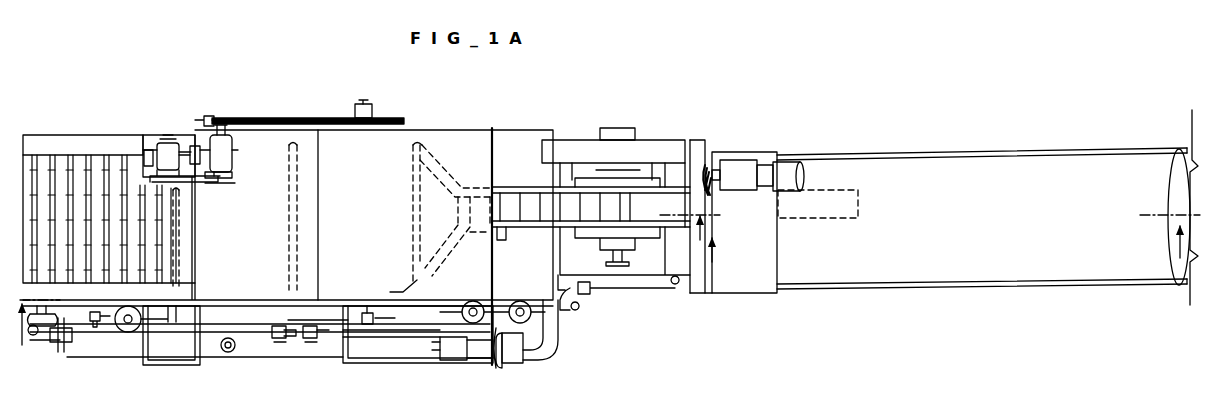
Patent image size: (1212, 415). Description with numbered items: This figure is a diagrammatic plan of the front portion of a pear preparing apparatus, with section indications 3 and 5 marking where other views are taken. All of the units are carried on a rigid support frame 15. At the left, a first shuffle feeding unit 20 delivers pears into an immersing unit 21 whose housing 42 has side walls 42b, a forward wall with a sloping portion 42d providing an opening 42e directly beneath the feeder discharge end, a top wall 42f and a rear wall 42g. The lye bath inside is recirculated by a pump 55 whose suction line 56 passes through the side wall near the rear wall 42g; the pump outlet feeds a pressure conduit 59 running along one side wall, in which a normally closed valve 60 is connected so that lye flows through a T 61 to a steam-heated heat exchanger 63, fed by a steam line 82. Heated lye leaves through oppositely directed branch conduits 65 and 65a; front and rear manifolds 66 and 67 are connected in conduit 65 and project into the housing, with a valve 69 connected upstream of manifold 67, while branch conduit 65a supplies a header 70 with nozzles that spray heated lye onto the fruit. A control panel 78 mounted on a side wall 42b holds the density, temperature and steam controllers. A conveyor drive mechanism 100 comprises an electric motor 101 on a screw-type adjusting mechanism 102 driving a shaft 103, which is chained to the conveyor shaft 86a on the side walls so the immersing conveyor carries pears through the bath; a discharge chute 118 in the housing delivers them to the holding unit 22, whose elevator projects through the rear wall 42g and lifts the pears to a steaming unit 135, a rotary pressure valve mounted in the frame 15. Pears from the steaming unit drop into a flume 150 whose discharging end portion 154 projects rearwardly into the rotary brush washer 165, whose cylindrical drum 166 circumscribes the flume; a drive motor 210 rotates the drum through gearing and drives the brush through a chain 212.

The support frame 15 is at (46, 135).
The first shuffle feeding unit 20 is at (145, 220).
The immersing unit 21 is at (360, 217).
The holding unit 22 is at (530, 228).
The housing 42 is at (427, 130).
The side walls 42b is at (310, 118).
The sloping portion 42d is at (255, 236).
The opening 42e is at (193, 243).
The top wall 42f is at (366, 183).
The rear wall 42g is at (486, 151).
The pump 55 is at (528, 365).
The line 56 is at (552, 320).
The pressure conduit 59 is at (455, 333).
The valve 60 is at (330, 340).
The T 61 is at (376, 315).
The heat exchanger 63 is at (172, 345).
The branch conduit 65 is at (256, 338).
The branch conduit 65a is at (60, 342).
The front manifold 66 is at (180, 294).
The rear manifold 67 is at (300, 276).
The valve 69 is at (292, 340).
The header 70 is at (45, 305).
The control panel 78 is at (415, 363).
The steam line 82 is at (160, 322).
The shaft 86a is at (365, 104).
The conveyor drive mechanism 100 is at (192, 133).
The electric motor 101 is at (165, 139).
The screw-type adjusting mechanism 102 is at (210, 148).
The shaft 103 is at (216, 175).
The discharge chute 118 is at (412, 228).
The steaming unit 135 is at (650, 178).
The flume 150 is at (783, 226).
The discharging end portion 154 is at (860, 204).
The rotary brush washer 165 is at (998, 157).
The cylindrical drum 166 is at (979, 230).
The drive motor 210 is at (752, 185).
The chain 212 is at (712, 165).
The section line 3 is at (20, 301).
The section line 5 is at (956, 238).